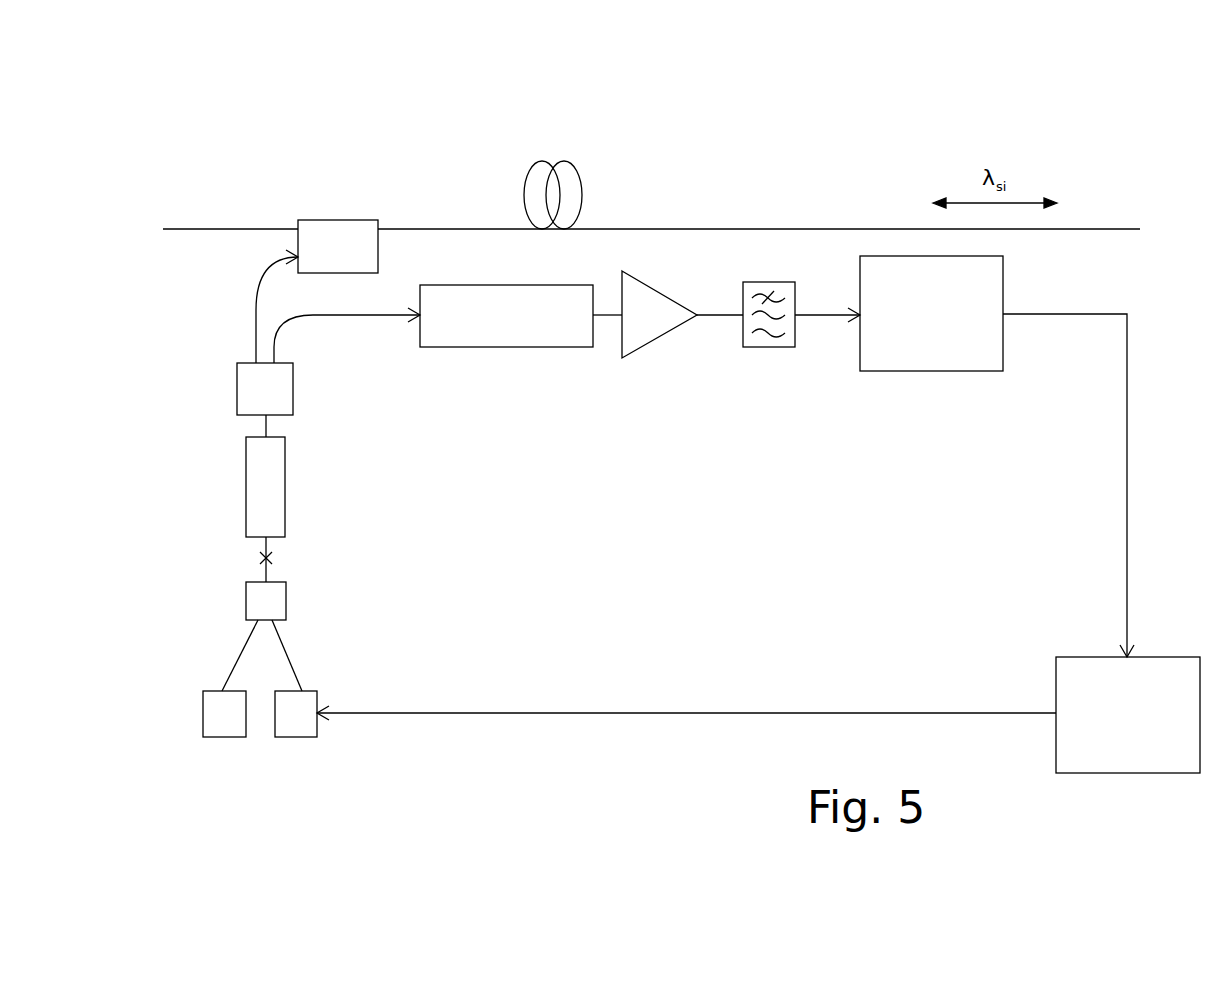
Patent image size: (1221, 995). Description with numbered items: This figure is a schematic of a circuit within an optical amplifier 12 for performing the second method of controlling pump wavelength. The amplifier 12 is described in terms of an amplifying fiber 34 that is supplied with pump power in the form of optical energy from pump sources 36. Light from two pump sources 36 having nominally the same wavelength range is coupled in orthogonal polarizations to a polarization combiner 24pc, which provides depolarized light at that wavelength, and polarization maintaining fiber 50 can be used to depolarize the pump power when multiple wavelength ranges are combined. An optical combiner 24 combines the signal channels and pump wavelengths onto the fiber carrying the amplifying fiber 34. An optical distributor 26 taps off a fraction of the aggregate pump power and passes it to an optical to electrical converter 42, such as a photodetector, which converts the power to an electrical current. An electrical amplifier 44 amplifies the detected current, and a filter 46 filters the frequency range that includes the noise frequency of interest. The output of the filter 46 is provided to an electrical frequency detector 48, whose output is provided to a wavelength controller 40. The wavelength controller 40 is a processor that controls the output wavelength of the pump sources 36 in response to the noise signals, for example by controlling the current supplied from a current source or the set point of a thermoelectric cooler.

The optical amplifier 12 is at (906, 138).
The optical combiner 24 is at (337, 220).
The polarization combiner 24pc is at (286, 600).
The optical distributor 26 is at (293, 388).
The amplifying fiber 34 is at (573, 162).
The pump sources 36 is at (290, 737).
The wavelength controller 40 is at (1127, 773).
The optical to electrical converter 42 is at (507, 347).
The electrical amplifier 44 is at (660, 338).
The filter 46 is at (768, 347).
The electrical frequency detector 48 is at (931, 371).
The polarization maintaining fiber 50 is at (245, 487).